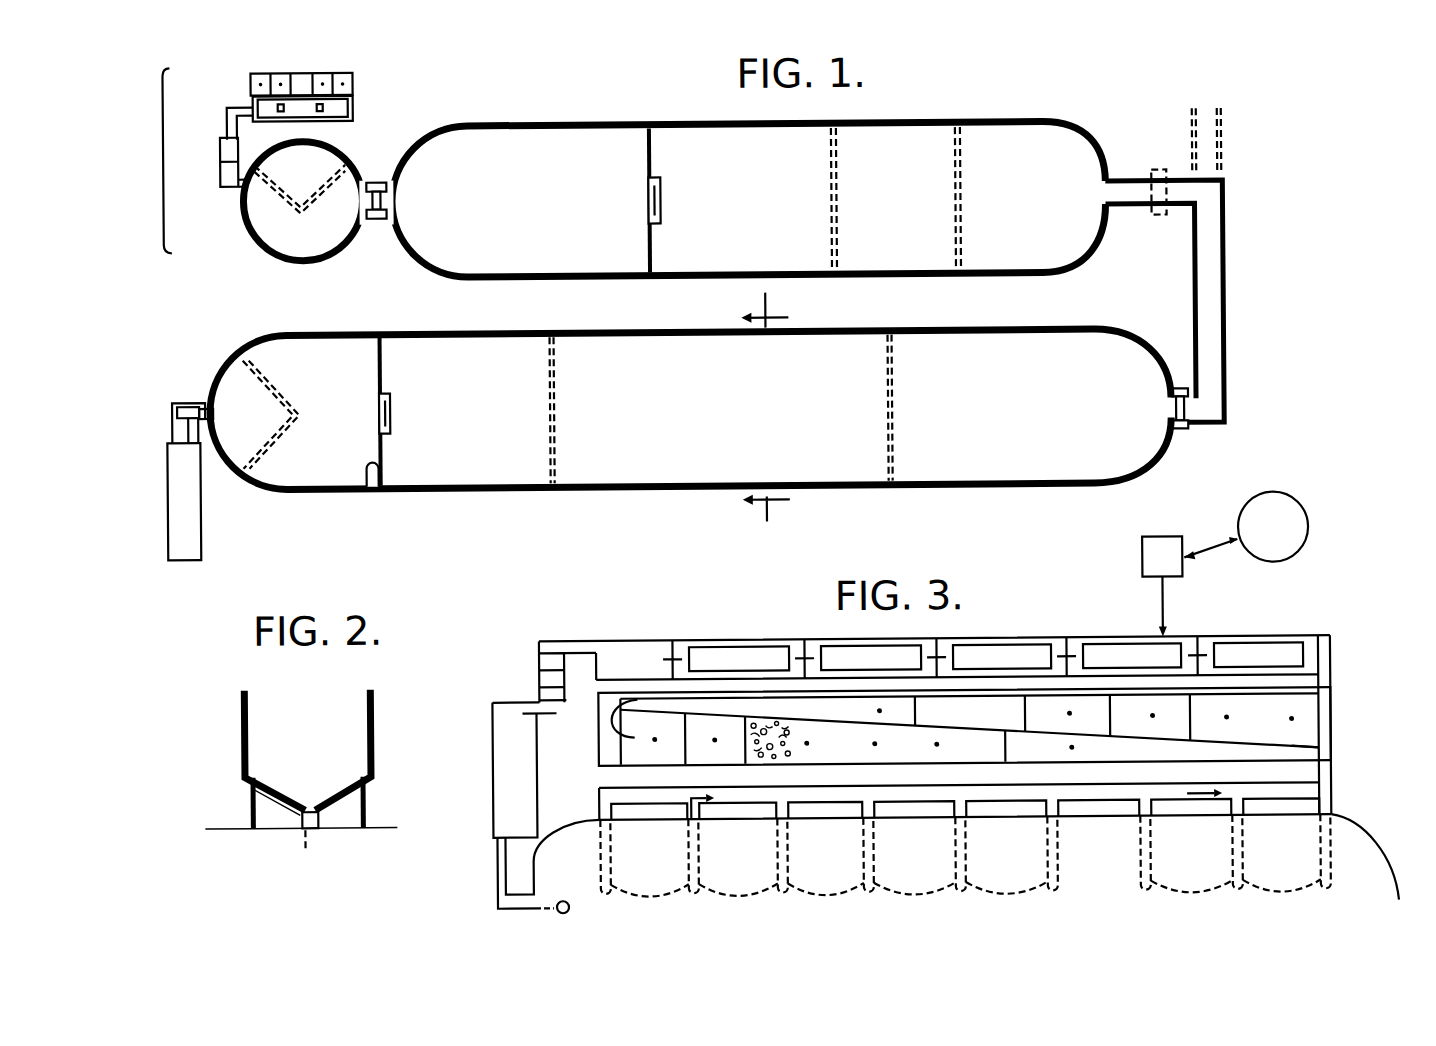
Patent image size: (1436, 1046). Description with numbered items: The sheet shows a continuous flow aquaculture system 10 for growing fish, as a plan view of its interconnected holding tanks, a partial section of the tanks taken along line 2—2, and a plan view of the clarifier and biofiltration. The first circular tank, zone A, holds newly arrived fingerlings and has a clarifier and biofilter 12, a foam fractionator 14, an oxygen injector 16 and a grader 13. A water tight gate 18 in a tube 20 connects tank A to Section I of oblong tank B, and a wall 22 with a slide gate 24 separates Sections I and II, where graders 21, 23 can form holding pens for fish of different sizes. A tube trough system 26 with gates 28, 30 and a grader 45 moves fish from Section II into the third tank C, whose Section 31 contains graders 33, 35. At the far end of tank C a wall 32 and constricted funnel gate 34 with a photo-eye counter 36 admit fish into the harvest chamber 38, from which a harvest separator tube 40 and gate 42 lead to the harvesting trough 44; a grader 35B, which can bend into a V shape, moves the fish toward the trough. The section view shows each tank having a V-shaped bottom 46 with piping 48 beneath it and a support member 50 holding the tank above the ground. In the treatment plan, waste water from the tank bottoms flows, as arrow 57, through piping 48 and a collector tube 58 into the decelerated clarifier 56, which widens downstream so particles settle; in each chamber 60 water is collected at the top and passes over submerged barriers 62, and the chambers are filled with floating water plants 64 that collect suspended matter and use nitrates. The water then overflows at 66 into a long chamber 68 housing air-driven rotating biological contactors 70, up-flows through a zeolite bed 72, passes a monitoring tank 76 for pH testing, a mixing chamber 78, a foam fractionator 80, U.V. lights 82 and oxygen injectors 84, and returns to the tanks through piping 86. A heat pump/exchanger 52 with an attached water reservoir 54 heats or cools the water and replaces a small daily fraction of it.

In FIG. 1, the continuous flow aquaculture system 10 is at (166, 153).
In FIG. 1, the clarifier and biofilter 12 is at (254, 86).
In FIG. 1, the grader 13 is at (278, 188).
In FIG. 1, the foam fractionator 14 is at (252, 103).
In FIG. 1, the oxygen injector 16 is at (223, 137).
In FIG. 1, the water tight gate 18 is at (381, 179).
In FIG. 1, the tube 20 is at (390, 223).
In FIG. 1, the grader 21 is at (840, 151).
In FIG. 1, the wall 22 is at (650, 149).
In FIG. 1, the grader 23 is at (964, 151).
In FIG. 1, the slide gate 24 is at (651, 190).
In FIG. 1, the tube trough system 26 is at (1227, 318).
In FIG. 1, the gate 28 is at (1161, 172).
In FIG. 1, the gate 30 is at (1178, 434).
In FIG. 1, the Section 31 is at (699, 405).
In FIG. 1, the wall 32 is at (386, 453).
In FIG. 1, the grader 33 is at (895, 438).
In FIG. 1, the constricted funnel gate 34 is at (392, 402).
In FIG. 1, the grader 35 is at (557, 437).
In FIG. 1, the grader 35B is at (267, 371).
In FIG. 1, the photo-eye counter 36 is at (367, 466).
In FIG. 1, the harvest chamber 38 is at (329, 408).
In FIG. 1, the harvest separator means or tube 40 is at (188, 399).
In FIG. 1, the passageway restrictor means or gate 42 is at (175, 409).
In FIG. 1, the harvesting trough 44 is at (169, 504).
In FIG. 1, the grader 45 is at (1200, 257).
In FIG. 2, the V-shaped bottom 46 is at (290, 799).
In FIG. 2, the piping 48 is at (313, 826).
In FIG. 3, the piping 48 is at (999, 865).
In FIG. 2, the support member 50 is at (249, 797).
In FIG. 3, the heat pump/exchanger 52 is at (1190, 586).
In FIG. 3, the water reservoir 54 is at (1273, 526).
In FIG. 3, the clarifier 56 is at (1305, 757).
In FIG. 3, the arrow 57 is at (1318, 776).
In FIG. 3, the collector tube 58 is at (1305, 801).
In FIG. 3, the clarifier chamber 60 is at (1302, 737).
In FIG. 3, the submerged barriers 62 is at (1003, 745).
In FIG. 3, the floating water plants 64 is at (787, 733).
In FIG. 3, the overflow 66 is at (1330, 677).
In FIG. 3, the long chamber 68 is at (1106, 630).
In FIG. 3, the rotating biological contactors 70 is at (1237, 640).
In FIG. 3, the zeolite bed 72 is at (611, 646).
In FIG. 3, the monitoring tank 76 is at (546, 643).
In FIG. 3, the mixing chamber 78 is at (534, 656).
In FIG. 3, the foam fractionator 80 is at (534, 670).
In FIG. 3, the U.V. lights 82 is at (551, 711).
In FIG. 3, the oxygen injectors 84 is at (500, 739).
In FIG. 3, the piping 86 is at (495, 858).
In FIG. 1, the section line 2— 2 is at (765, 409).